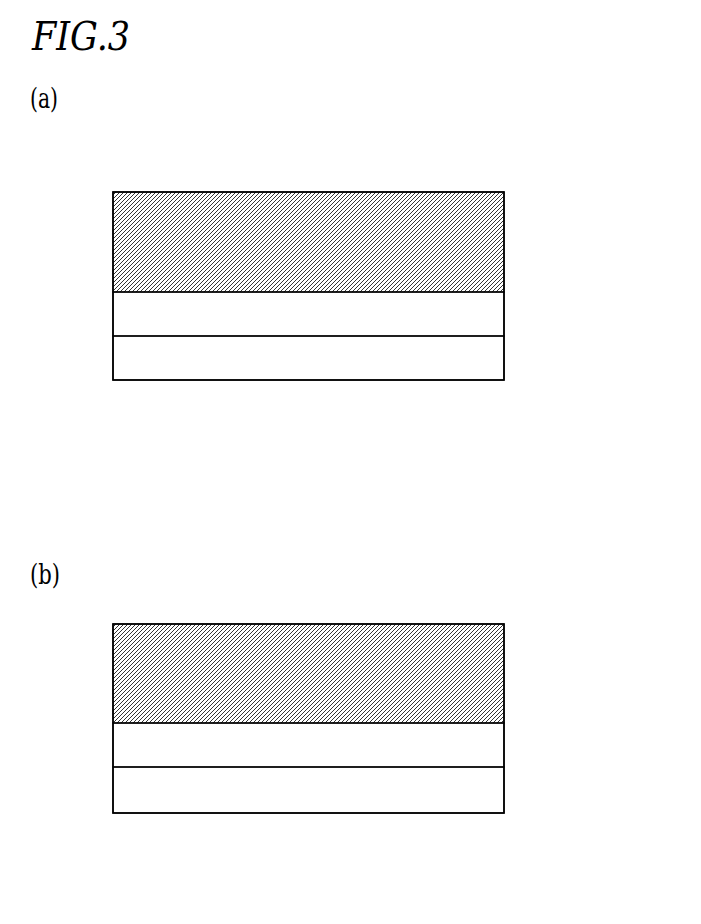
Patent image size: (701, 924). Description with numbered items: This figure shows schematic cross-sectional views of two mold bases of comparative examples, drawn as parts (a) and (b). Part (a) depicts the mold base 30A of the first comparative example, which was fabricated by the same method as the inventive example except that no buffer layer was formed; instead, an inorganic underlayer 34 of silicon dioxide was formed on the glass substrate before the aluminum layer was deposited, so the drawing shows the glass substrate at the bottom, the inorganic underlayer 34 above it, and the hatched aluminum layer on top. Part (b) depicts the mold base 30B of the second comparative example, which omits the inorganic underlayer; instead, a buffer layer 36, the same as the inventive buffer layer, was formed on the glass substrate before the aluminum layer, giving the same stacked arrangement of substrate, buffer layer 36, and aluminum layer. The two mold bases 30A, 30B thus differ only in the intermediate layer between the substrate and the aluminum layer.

The mold base 30A is at (364, 238).
The mold base 30B is at (364, 671).
The inorganic underlayer 34 is at (493, 314).
The buffer layer 36 is at (493, 747).